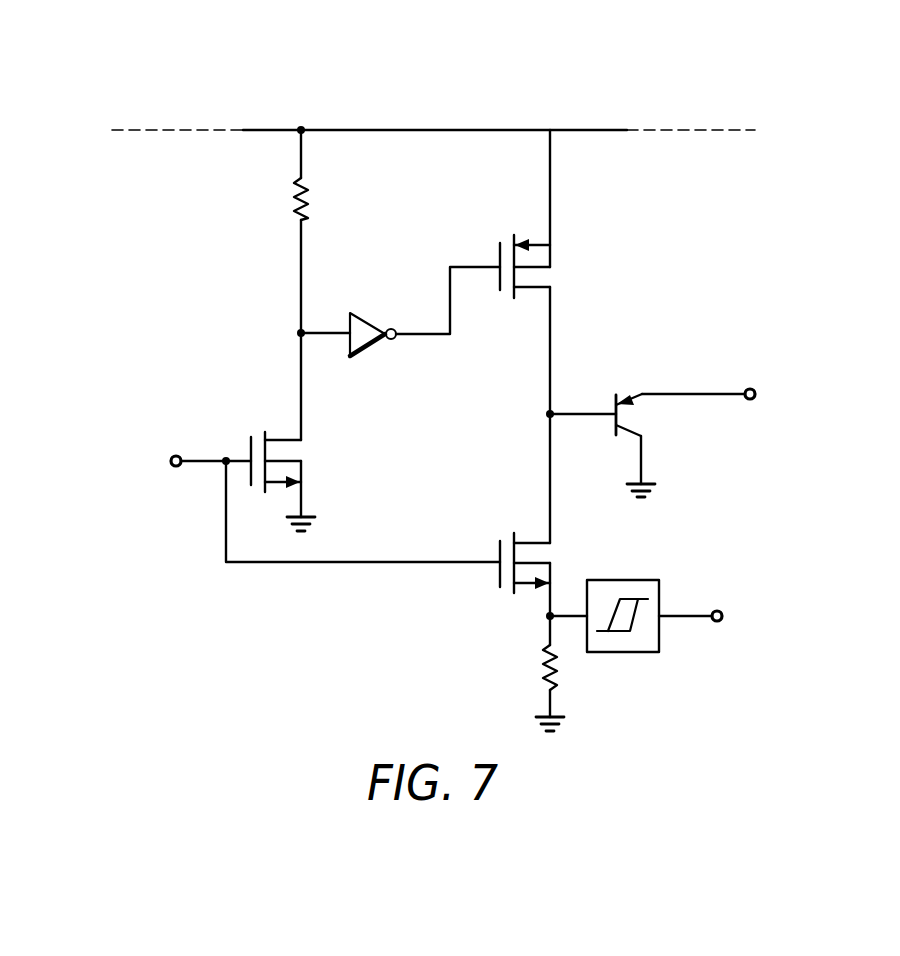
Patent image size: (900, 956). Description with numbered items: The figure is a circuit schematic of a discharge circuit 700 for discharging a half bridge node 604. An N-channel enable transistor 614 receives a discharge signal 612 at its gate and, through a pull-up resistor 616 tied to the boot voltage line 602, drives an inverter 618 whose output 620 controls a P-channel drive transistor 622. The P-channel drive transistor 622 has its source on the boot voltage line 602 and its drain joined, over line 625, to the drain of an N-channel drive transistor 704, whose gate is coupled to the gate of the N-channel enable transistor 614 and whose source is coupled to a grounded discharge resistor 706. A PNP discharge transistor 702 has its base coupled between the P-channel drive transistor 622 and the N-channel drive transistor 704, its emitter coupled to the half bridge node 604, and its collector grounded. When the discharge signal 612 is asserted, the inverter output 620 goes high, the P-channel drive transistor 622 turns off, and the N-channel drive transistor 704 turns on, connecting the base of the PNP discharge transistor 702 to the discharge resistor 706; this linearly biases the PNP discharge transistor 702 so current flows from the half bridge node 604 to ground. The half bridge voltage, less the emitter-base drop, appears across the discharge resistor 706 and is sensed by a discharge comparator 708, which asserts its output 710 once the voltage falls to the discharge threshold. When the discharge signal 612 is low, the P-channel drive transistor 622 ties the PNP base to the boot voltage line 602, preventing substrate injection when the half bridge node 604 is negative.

The discharge circuit 700 is at (880, 110).
The boot voltage line 602 is at (436, 128).
The pull-up resistor 616 is at (308, 206).
The inverter 618 is at (372, 323).
The output 620 is at (452, 321).
The P-channel drive transistor 622 is at (500, 250).
The line 625 is at (552, 502).
The N-channel enable transistor 614 is at (286, 437).
The discharge signal 612 is at (200, 455).
The PNP discharge transistor 702 is at (613, 401).
The half bridge node 604 is at (718, 397).
The N-channel drive transistor 704 is at (500, 547).
The discharge resistor 706 is at (559, 672).
The discharge comparator 708 is at (645, 580).
The output 710 is at (688, 618).